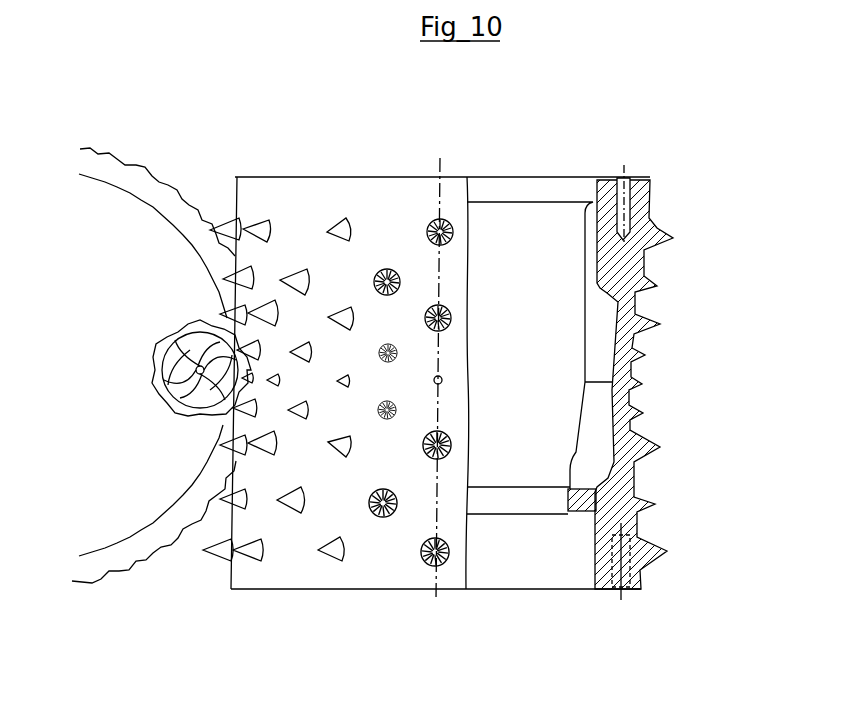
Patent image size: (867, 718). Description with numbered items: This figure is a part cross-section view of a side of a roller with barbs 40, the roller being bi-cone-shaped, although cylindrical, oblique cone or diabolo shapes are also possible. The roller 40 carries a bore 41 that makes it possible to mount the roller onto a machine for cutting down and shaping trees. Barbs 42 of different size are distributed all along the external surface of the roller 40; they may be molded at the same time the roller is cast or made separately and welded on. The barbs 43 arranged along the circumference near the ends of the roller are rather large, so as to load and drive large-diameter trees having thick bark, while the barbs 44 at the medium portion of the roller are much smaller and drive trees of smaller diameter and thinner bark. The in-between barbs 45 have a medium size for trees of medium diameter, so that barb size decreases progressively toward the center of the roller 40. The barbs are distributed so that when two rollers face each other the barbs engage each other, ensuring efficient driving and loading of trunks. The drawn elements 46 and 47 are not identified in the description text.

The roller with barbs 40 is at (630, 146).
The bore 41 is at (631, 201).
The barbs 42 is at (427, 222).
The barbs 43 is at (232, 225).
The barbs 44 is at (630, 371).
The in-between barbs 45 is at (233, 263).
The roller cutter 46 is at (170, 402).
The borehole wall 47 is at (125, 557).